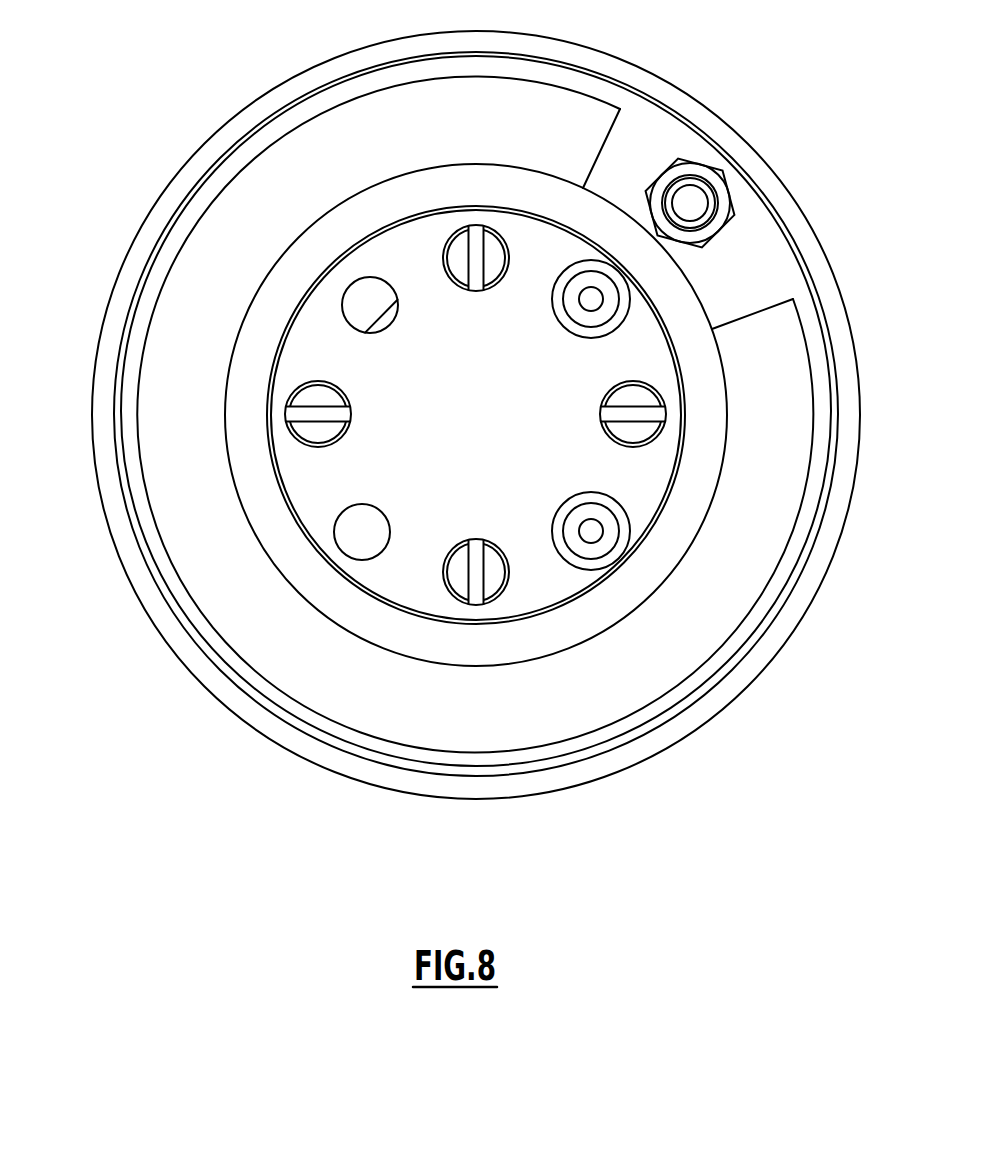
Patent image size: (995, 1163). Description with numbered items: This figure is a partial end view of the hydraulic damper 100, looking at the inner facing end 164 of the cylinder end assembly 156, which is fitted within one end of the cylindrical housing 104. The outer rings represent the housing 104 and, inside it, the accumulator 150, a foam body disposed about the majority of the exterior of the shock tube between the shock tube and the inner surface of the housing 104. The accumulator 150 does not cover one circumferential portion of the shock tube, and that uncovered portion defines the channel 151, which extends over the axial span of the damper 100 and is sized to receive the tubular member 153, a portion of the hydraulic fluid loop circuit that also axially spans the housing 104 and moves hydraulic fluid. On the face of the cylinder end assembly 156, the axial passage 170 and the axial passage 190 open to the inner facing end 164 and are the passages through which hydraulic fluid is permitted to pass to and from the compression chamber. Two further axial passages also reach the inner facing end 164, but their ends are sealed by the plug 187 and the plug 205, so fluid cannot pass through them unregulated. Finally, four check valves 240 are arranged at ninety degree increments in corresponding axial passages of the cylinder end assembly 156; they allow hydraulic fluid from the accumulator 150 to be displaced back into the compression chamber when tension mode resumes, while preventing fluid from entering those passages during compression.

The damper 100 is at (168, 30).
The housing 104 is at (100, 503).
The accumulator 150 is at (180, 297).
The channel 151 is at (765, 252).
The tubular member 153 is at (713, 192).
The cylinder end assembly 156 is at (283, 517).
The inner facing end 164 is at (412, 568).
The axial passage 170 is at (348, 538).
The plug 187 is at (603, 543).
The axial passage 190 is at (353, 302).
The plug 205 is at (587, 290).
The check valves 240 is at (452, 250).